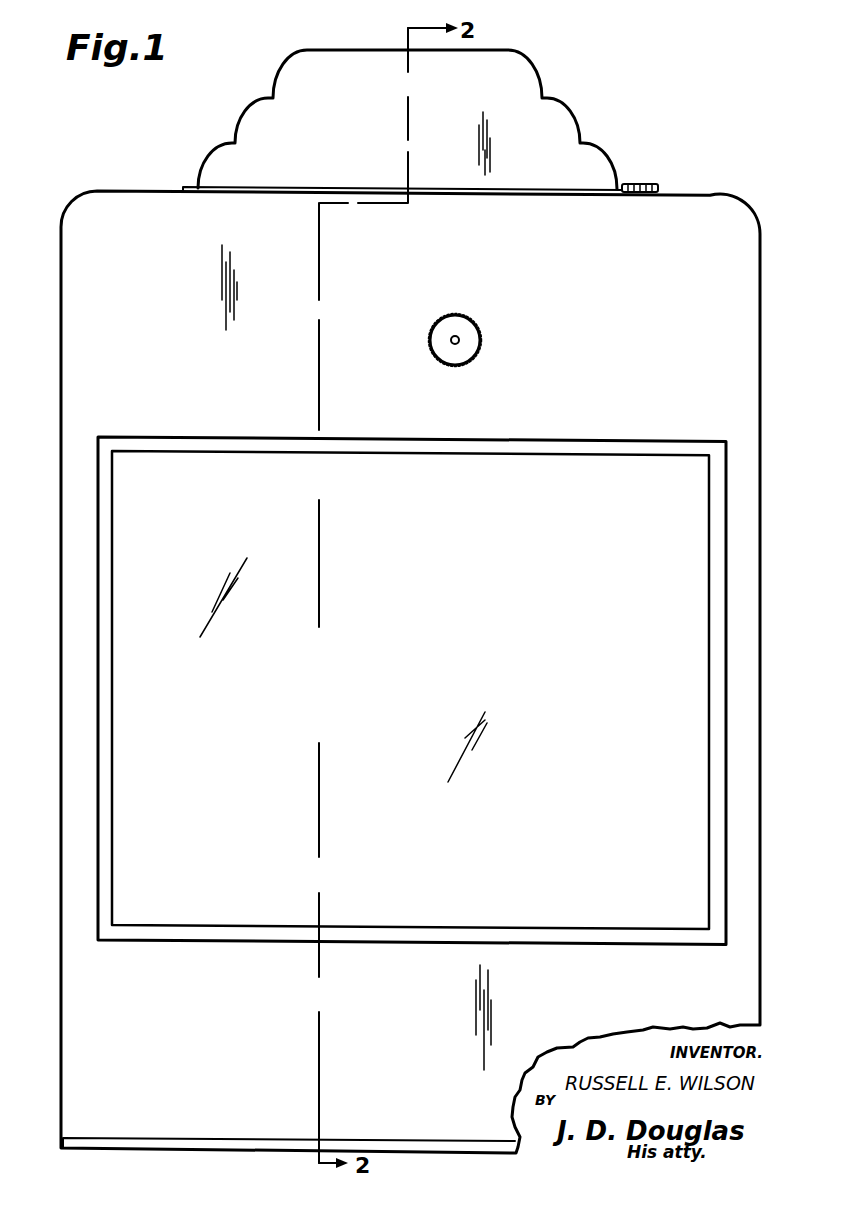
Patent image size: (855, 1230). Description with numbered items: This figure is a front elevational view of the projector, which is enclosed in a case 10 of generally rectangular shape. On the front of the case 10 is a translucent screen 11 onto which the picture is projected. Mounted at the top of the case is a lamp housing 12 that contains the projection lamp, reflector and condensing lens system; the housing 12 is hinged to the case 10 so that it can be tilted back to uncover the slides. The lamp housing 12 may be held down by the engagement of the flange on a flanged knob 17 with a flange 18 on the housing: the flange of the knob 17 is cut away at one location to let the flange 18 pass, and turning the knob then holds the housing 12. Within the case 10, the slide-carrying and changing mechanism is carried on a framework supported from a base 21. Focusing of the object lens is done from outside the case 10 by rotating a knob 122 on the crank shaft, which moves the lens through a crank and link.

The case 10 is at (737, 265).
The translucent screen 11 is at (608, 477).
The lamp housing 12 is at (563, 121).
The flanged knob 17 is at (641, 185).
The flange 18 is at (612, 184).
The base 21 is at (118, 1145).
The knob 122 is at (469, 333).